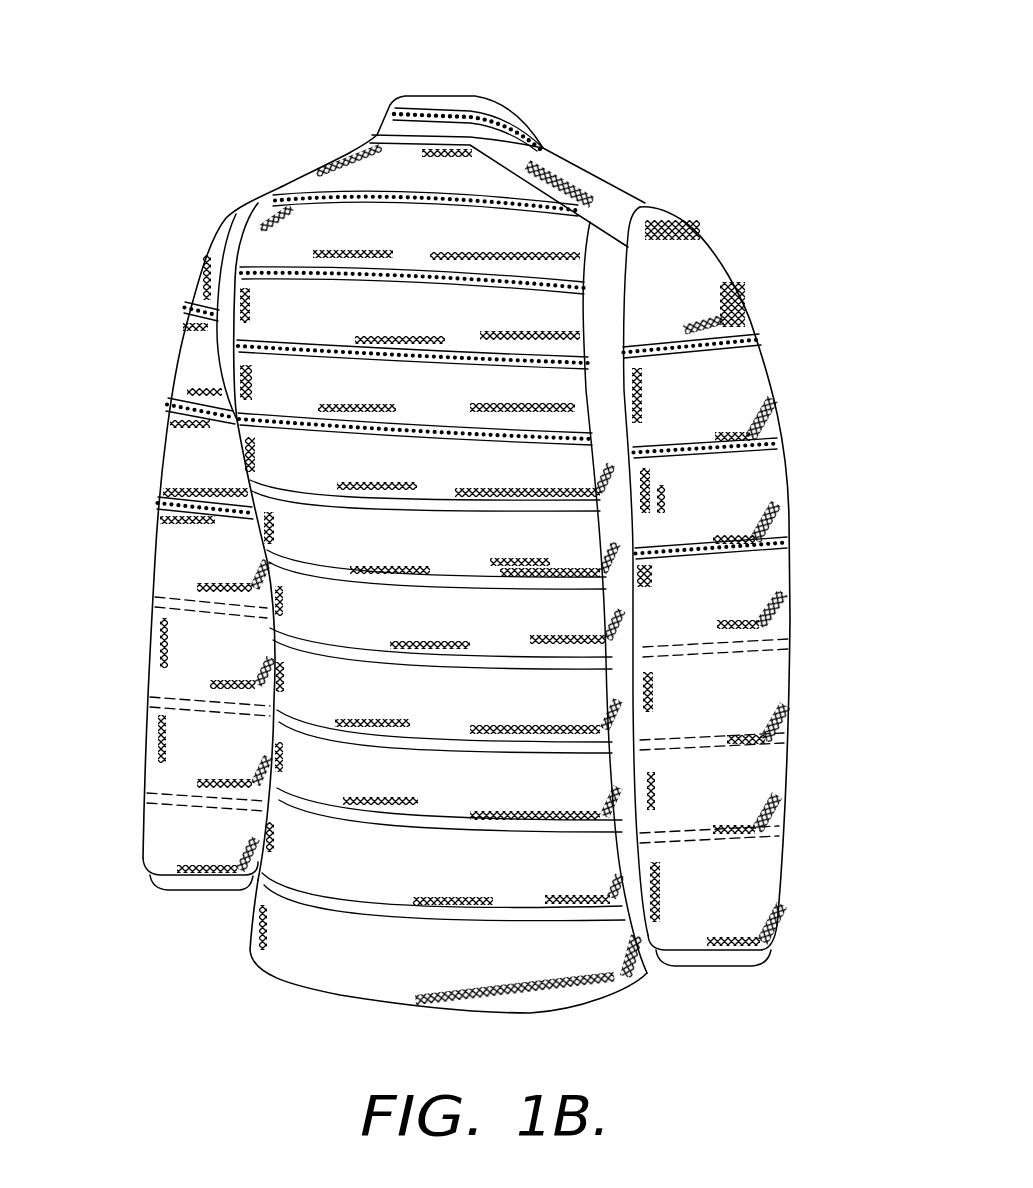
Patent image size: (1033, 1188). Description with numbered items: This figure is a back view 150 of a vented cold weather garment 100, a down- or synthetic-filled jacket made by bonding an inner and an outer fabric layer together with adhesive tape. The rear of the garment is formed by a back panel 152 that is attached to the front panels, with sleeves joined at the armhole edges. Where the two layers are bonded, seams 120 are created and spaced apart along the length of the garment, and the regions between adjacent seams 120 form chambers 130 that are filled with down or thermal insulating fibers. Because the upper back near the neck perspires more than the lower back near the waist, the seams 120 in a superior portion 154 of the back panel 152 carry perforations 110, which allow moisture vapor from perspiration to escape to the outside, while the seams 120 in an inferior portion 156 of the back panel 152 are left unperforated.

The vented cold weather garment 100 is at (447, 530).
The perforations 110 is at (763, 447).
The seams 120 is at (763, 330).
The chambers 130 is at (790, 333).
The back view 150 is at (245, 229).
The back panel 152 is at (547, 237).
The superior portion 154 is at (112, 515).
The inferior portion 156 is at (112, 955).